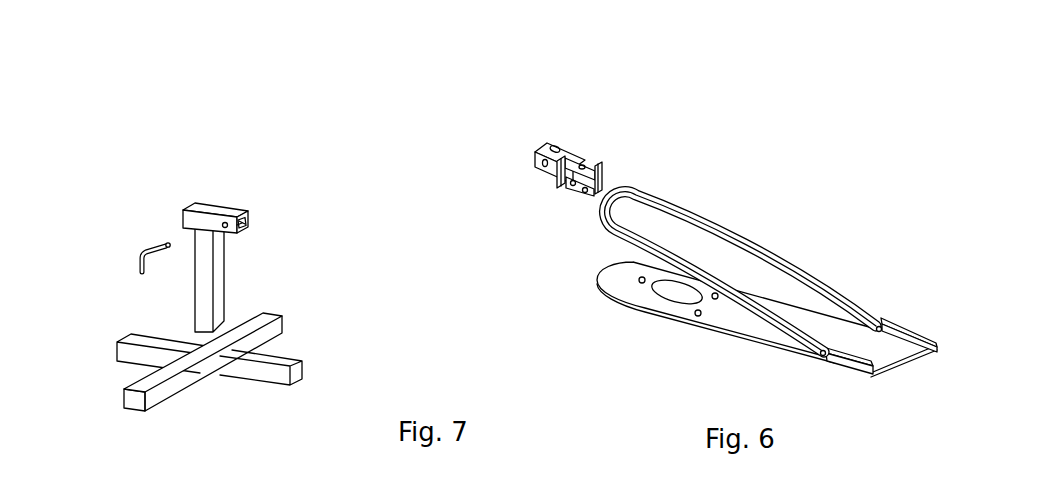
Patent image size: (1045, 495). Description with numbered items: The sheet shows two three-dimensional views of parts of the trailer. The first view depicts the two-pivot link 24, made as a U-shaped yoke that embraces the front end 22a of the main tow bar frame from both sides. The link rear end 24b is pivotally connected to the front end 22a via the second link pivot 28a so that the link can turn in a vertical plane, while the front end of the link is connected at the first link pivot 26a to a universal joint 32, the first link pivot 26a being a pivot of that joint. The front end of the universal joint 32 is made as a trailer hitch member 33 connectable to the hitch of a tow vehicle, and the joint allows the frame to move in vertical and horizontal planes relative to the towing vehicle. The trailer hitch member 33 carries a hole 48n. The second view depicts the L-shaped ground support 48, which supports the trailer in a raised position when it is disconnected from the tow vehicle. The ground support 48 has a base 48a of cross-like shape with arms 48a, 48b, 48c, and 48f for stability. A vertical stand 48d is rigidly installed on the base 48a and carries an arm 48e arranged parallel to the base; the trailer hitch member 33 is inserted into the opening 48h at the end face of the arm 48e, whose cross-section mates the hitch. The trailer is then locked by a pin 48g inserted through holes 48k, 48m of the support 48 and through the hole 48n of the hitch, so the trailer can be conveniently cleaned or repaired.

In FIG. 7, the ground support 48 is at (164, 174).
In FIG. 7, the base 48a is at (284, 314).
In FIG. 7, the arm of the base 48b is at (145, 412).
In FIG. 7, the arm of the base 48c is at (302, 362).
In FIG. 7, the vertical stand 48d is at (226, 279).
In FIG. 7, the arm 48e is at (208, 207).
In FIG. 7, the arm of the base 48f is at (128, 356).
In FIG. 7, the pin 48g is at (142, 254).
In FIG. 7, the opening 48h is at (242, 229).
In FIG. 7, the hole 48k is at (227, 222).
In FIG. 7, the hole 48m is at (246, 219).
In FIG. 6, the hole 48n is at (537, 163).
In FIG. 6, the front end of the main tow bar frame 22a is at (658, 316).
In FIG. 6, the two-pivot link 24 is at (772, 239).
In FIG. 6, the link rear end 24b is at (866, 314).
In FIG. 6, the first link pivot 26a is at (570, 186).
In FIG. 6, the second link pivot 28a is at (820, 354).
In FIG. 6, the universal joint 32 is at (596, 170).
In FIG. 6, the trailer hitch member 33 is at (568, 150).